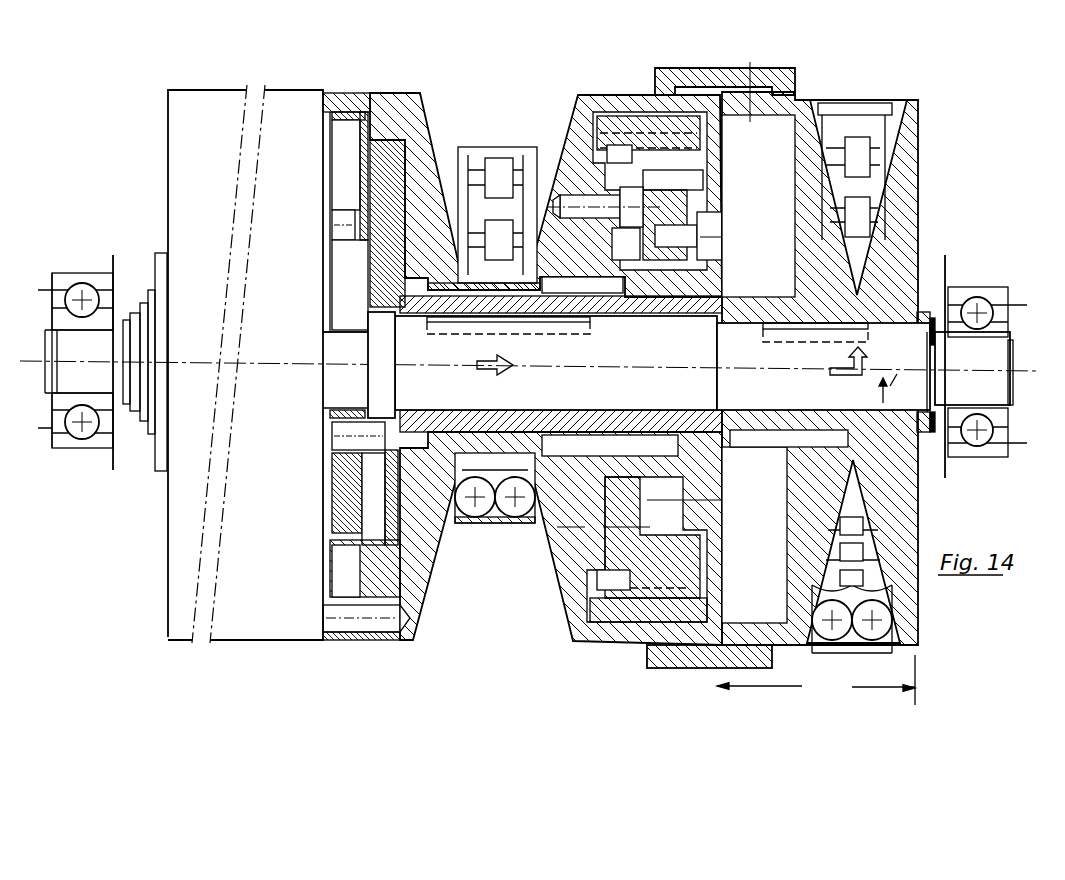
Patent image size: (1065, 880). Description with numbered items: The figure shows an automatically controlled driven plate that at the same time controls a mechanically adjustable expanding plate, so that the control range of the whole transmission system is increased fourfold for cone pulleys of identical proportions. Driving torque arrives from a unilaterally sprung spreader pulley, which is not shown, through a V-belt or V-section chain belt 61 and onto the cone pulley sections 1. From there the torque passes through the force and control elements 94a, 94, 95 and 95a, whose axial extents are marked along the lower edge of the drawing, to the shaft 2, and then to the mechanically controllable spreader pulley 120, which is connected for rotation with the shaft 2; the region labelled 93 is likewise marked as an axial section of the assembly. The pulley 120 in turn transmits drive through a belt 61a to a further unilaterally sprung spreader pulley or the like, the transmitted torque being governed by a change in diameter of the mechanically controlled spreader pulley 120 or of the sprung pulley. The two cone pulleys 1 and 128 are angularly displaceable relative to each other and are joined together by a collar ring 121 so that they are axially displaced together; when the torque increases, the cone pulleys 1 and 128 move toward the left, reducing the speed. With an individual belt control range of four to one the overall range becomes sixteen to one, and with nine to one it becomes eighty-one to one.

The cone pulley sections 1 is at (577, 140).
The shaft 2 is at (895, 342).
The V-belt or V-section chain belt 61 is at (495, 520).
The belt 61a is at (877, 135).
The housing section 93 is at (717, 684).
The force and control element 94 is at (245, 391).
The force and control element 94a is at (132, 473).
The force and control element 95 is at (165, 648).
The force and control element 95a is at (397, 682).
The mechanically controllable spreader pulley 120 is at (816, 680).
The collar ring 121 is at (763, 82).
The cone pulley 128 is at (812, 188).